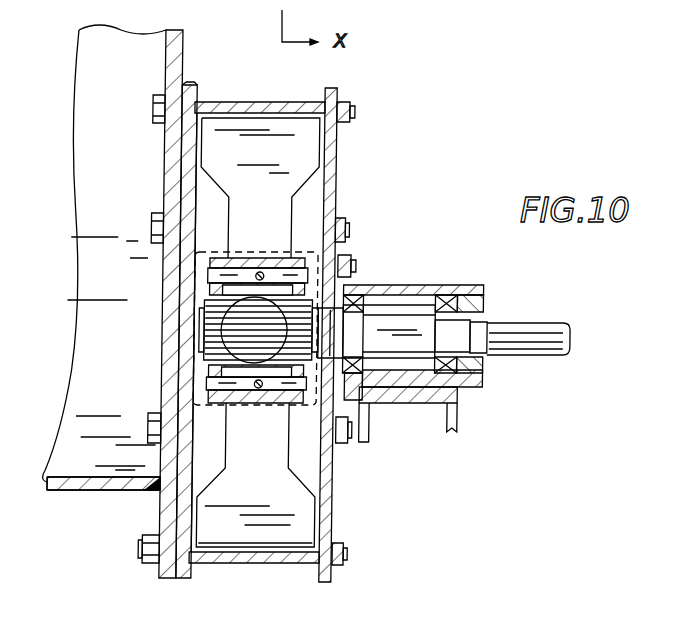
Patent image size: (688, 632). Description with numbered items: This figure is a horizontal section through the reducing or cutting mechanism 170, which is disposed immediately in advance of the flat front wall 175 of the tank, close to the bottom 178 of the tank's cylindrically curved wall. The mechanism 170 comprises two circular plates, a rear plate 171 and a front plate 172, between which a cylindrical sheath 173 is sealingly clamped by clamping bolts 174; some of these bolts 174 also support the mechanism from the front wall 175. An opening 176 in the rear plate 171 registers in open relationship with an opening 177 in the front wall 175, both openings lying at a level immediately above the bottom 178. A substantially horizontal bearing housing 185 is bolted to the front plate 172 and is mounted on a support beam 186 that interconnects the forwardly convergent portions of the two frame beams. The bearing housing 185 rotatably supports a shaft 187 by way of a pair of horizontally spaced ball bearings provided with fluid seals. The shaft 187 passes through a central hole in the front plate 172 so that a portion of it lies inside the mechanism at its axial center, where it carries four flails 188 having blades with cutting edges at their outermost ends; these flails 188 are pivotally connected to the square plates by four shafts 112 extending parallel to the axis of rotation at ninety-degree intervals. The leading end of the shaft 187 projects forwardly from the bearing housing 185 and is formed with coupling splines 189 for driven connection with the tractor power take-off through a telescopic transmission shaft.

The shafts 112 is at (244, 262).
The reducing or cutting mechanism 170 is at (281, 102).
The rear plate 171 is at (189, 84).
The front plate 172 is at (334, 164).
The cylindrical sheath 173 is at (300, 107).
The clamping bolts 174 is at (355, 110).
The front wall 175 is at (180, 47).
The opening 176 is at (186, 445).
The opening 177 is at (165, 404).
The bottom 178 is at (83, 483).
The bearing housing 185 is at (420, 285).
The support beam 186 is at (462, 414).
The shaft 187 is at (411, 356).
The flails 188 is at (308, 188).
The coupling splines 189 is at (544, 324).